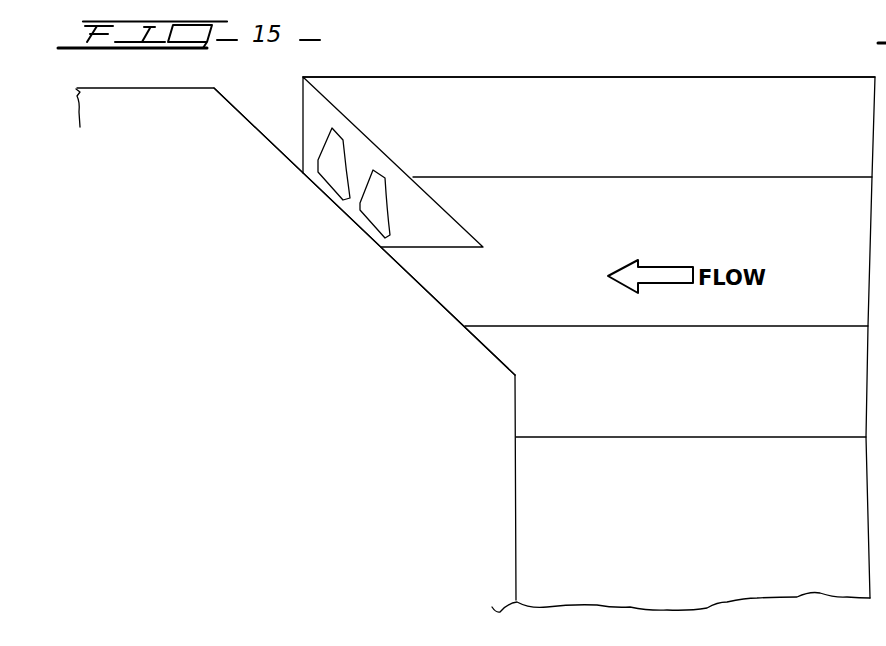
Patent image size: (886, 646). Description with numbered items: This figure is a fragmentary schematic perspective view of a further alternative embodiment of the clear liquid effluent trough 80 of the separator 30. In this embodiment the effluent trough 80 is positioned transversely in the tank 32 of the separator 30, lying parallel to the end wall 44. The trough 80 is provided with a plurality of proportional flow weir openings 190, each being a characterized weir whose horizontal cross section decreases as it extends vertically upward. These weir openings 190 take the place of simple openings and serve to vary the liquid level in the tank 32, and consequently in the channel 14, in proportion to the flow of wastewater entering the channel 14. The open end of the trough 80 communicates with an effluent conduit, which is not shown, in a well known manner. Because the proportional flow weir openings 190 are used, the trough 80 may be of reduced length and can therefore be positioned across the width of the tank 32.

The channel 14 is at (410, 362).
The separator 30 is at (752, 72).
The tank 32 is at (668, 98).
The end wall 44 is at (268, 140).
The clear liquid effluent trough 80 is at (312, 122).
The proportional flow weir opening 190 is at (385, 190).